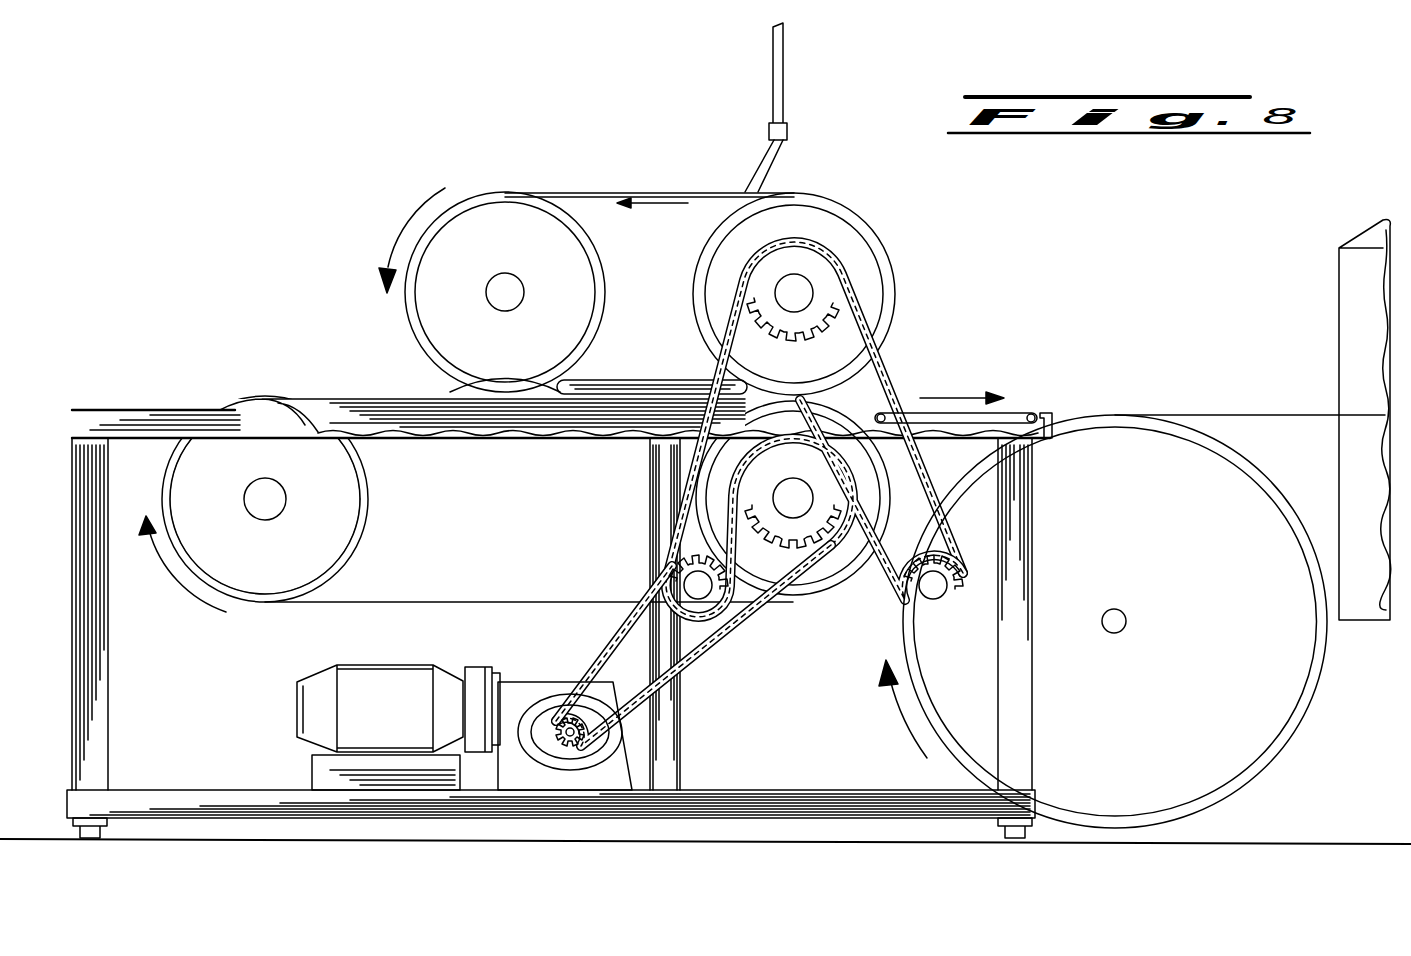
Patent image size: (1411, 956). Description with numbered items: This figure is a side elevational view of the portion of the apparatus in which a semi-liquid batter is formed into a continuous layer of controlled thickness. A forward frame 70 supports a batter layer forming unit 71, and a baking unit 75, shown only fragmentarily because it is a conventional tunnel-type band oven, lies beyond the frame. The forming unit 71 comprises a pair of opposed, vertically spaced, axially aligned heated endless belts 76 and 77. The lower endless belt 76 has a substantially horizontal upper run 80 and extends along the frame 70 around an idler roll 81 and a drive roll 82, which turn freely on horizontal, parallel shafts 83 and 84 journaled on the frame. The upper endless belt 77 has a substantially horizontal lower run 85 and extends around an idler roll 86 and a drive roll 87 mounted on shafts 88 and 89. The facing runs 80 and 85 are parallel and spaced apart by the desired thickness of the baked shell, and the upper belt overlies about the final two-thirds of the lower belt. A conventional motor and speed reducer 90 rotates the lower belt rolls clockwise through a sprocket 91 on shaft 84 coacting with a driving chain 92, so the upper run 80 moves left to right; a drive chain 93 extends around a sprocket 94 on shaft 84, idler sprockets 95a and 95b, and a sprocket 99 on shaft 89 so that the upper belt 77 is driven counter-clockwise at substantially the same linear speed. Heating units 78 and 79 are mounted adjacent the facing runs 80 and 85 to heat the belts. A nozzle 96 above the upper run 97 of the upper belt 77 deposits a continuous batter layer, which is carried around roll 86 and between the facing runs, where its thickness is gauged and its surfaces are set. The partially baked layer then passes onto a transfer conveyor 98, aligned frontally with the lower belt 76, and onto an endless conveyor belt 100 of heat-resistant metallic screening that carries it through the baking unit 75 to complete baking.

The forward frame 70 is at (104, 698).
The batter layer forming unit 71 is at (428, 162).
The baking unit 75 is at (1352, 244).
The lower endless belt 76 is at (410, 602).
The upper endless belt 77 is at (583, 192).
The heating unit 78 is at (355, 418).
The heating unit 79 is at (646, 384).
The upper run 80 is at (306, 398).
The idler roll 81 is at (278, 566).
The drive roll 82 is at (826, 596).
The shaft 83 is at (270, 492).
The shaft 84 is at (800, 497).
The lower run 85 is at (470, 379).
The idler roll 86 is at (504, 258).
The drive roll 87 is at (884, 248).
The shaft 88 is at (515, 292).
The shaft 89 is at (785, 296).
The motor and speed reducer 90 is at (514, 694).
The sprocket 91 is at (760, 600).
The driving chain 92 is at (714, 656).
The drive chain 93 is at (882, 382).
The sprocket 94 is at (815, 545).
The idler sprocket 95a is at (942, 556).
The idler sprocket 95b is at (700, 556).
The nozzle 96 is at (778, 103).
The upper run 97 is at (767, 190).
The transfer conveyor 98 is at (1010, 410).
The sprocket 99 is at (840, 325).
The endless conveyor belt 100 is at (1213, 413).